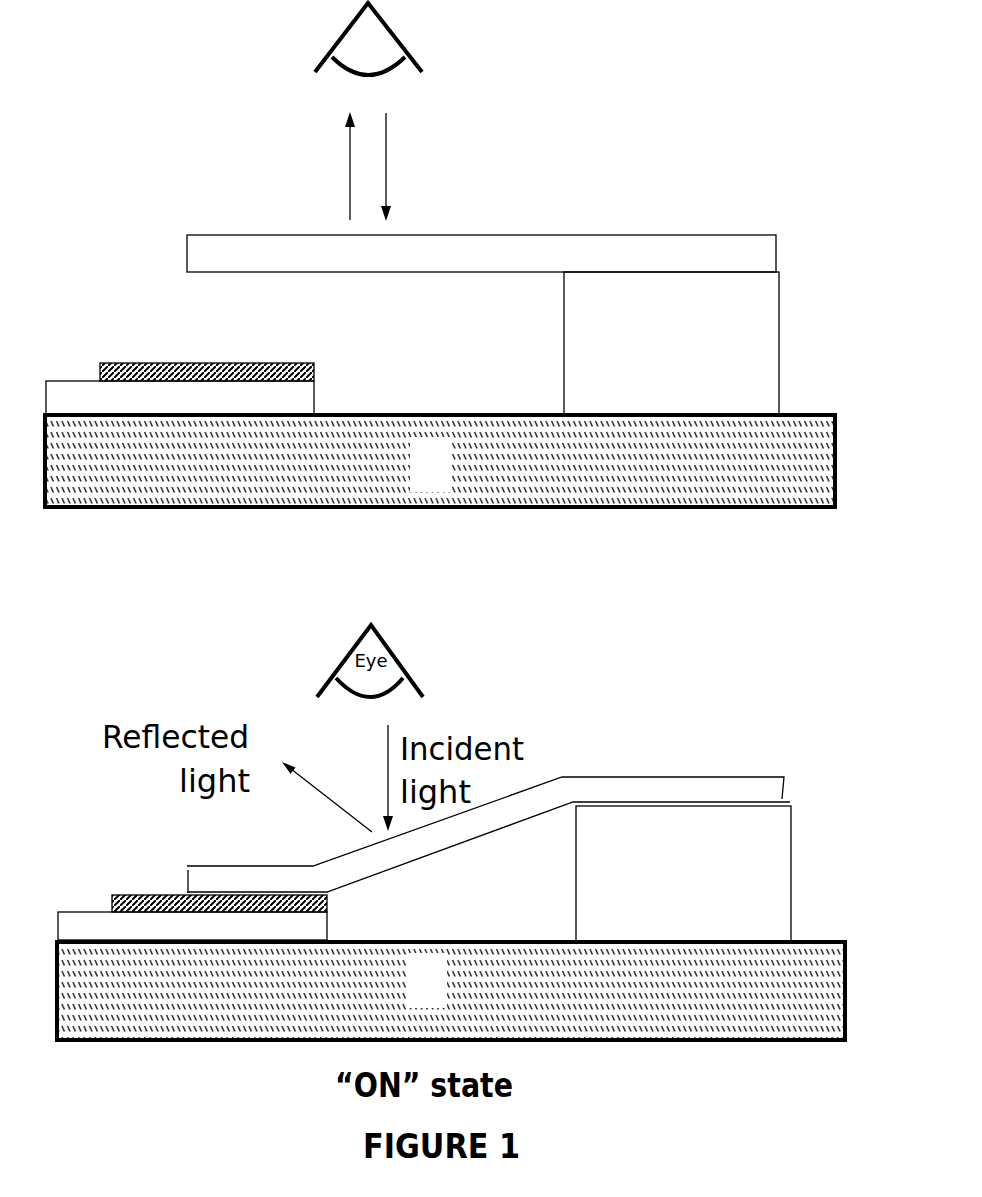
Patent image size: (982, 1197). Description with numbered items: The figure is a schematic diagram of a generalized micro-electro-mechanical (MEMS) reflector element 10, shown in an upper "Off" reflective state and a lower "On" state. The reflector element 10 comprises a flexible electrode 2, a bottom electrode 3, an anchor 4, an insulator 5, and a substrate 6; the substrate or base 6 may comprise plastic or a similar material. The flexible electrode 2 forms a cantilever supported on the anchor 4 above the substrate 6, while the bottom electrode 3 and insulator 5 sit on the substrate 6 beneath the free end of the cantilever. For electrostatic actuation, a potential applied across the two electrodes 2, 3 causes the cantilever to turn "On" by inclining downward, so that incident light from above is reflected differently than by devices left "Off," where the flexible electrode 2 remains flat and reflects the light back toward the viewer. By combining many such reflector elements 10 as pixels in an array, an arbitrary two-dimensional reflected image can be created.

The reflector element 10 is at (132, 189).
The flexible electrode 2 is at (470, 247).
The bottom electrode 3 is at (280, 402).
The anchor 4 is at (677, 607).
The insulator 5 is at (138, 363).
The substrate 6 is at (445, 727).